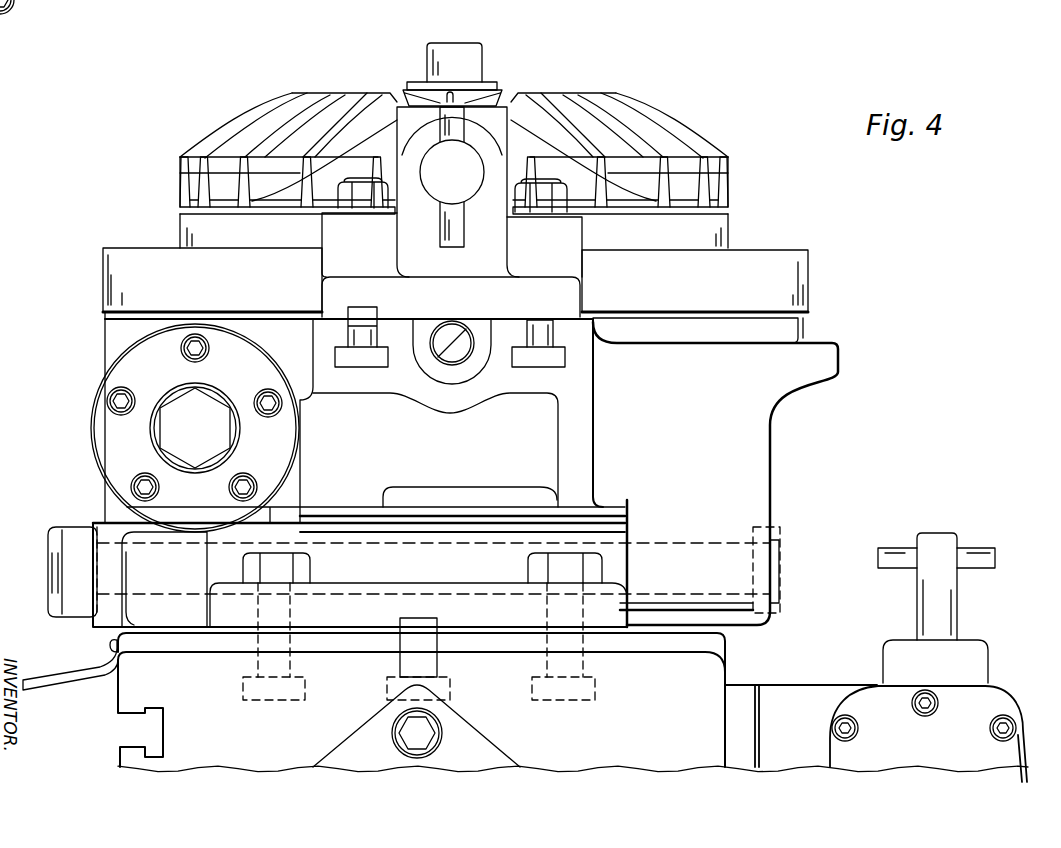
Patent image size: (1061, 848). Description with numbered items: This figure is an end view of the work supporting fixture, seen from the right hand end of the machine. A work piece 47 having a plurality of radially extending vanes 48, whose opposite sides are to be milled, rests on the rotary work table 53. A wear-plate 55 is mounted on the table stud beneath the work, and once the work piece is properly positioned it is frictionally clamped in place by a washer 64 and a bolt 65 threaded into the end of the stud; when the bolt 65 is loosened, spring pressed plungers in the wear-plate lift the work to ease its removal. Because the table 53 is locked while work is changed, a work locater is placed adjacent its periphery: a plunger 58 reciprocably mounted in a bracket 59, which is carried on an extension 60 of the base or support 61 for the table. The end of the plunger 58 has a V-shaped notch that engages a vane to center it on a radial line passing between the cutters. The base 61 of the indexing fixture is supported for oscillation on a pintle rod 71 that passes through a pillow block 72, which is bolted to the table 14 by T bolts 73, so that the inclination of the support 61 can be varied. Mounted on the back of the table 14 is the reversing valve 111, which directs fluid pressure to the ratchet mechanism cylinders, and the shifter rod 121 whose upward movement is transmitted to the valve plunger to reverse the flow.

The table 14 is at (686, 697).
The work piece 47 is at (620, 133).
The vanes 48 is at (318, 110).
The rotary work table 53 is at (780, 267).
The wear-plate 55 is at (188, 236).
The plunger 58 is at (470, 186).
The bracket 59 is at (413, 228).
The extension 60 is at (470, 400).
The base 61 is at (752, 402).
The washer 64 is at (484, 89).
The bolt 65 is at (468, 50).
The pintle rod 71 is at (707, 556).
The pillow block 72 is at (473, 622).
The T bolts 73 is at (285, 690).
The reversing valve 111 is at (975, 722).
The shifter rod 121 is at (948, 590).